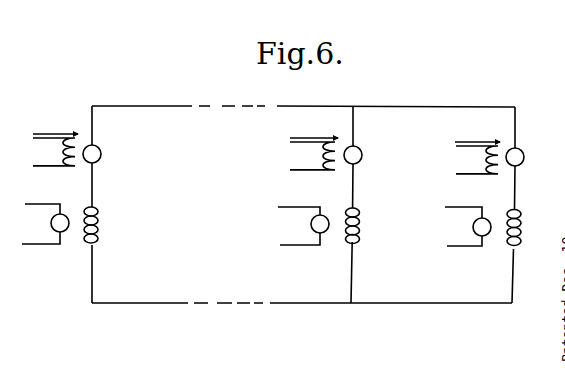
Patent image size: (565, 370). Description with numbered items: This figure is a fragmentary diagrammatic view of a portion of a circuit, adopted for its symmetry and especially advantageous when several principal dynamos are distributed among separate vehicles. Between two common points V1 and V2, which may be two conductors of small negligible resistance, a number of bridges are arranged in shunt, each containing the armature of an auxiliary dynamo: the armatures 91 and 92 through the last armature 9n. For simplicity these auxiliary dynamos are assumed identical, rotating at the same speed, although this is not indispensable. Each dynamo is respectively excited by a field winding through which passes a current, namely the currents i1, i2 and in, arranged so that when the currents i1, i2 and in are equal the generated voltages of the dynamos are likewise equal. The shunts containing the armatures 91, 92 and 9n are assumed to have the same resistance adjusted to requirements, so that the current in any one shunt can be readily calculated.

The auxiliary dynamo armature 91 is at (499, 205).
The auxiliary dynamo armature 92 is at (334, 204).
The auxiliary dynamo armature 9n is at (74, 204).
The field winding current i1 is at (478, 131).
The field winding current i2 is at (314, 128).
The field winding current in is at (56, 124).
The common point V1 is at (380, 98).
The common point V2 is at (306, 331).